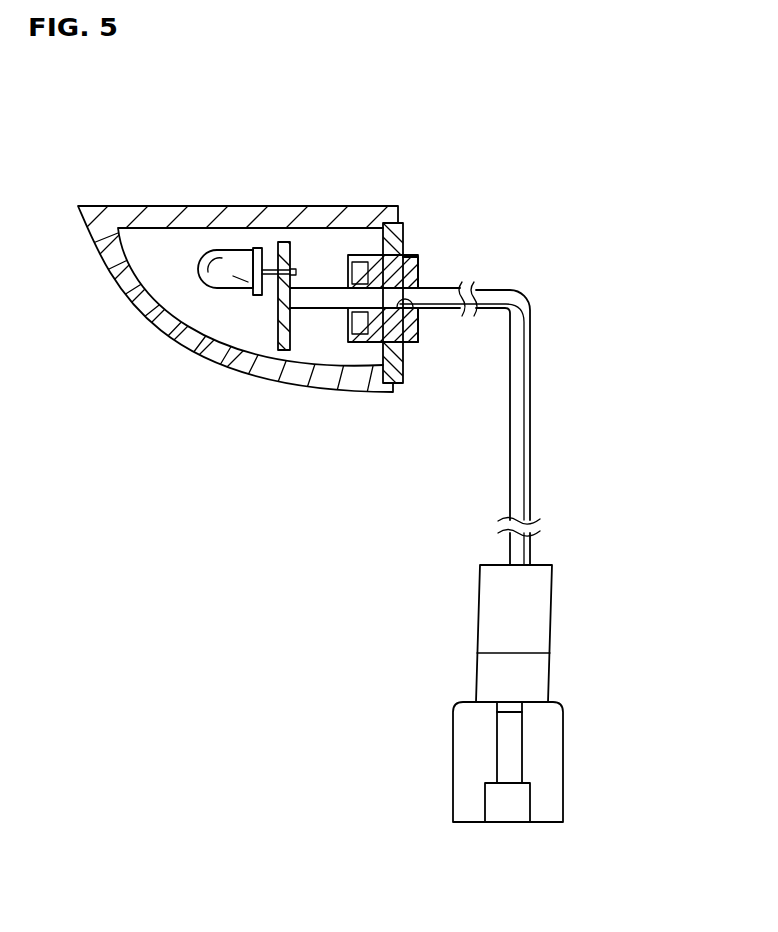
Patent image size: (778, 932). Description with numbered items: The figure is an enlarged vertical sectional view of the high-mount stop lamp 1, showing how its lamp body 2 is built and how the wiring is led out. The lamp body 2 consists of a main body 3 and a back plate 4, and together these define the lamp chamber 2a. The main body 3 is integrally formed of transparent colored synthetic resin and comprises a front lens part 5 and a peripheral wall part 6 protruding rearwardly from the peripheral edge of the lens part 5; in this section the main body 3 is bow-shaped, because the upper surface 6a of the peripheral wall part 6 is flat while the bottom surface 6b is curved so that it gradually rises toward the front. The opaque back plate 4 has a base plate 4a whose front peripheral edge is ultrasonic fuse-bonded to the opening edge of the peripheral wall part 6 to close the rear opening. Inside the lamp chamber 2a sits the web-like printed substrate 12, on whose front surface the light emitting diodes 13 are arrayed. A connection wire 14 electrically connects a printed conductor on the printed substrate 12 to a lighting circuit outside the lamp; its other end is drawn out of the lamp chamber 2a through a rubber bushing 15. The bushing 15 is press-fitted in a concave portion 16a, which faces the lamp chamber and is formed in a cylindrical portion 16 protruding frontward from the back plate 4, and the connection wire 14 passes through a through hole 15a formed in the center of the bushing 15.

The high-mount stop lamp 1 is at (443, 105).
The lamp body 2 is at (418, 88).
The lamp chamber 2a is at (191, 267).
The main body 3 is at (297, 297).
The back plate 4 is at (411, 291).
The base plate 4a is at (407, 383).
The lens part 5 is at (103, 277).
The peripheral wall part 6 is at (297, 297).
The upper surface 6a is at (176, 206).
The bottom surface 6b is at (307, 383).
The printed substrate 12 is at (278, 342).
The light emitting diode 13 is at (227, 280).
The connection wire 14 is at (515, 385).
The bushing 15 is at (445, 288).
The through hole 15a is at (424, 304).
The cylindrical portion 16 is at (391, 315).
The concave portion 16a is at (348, 262).